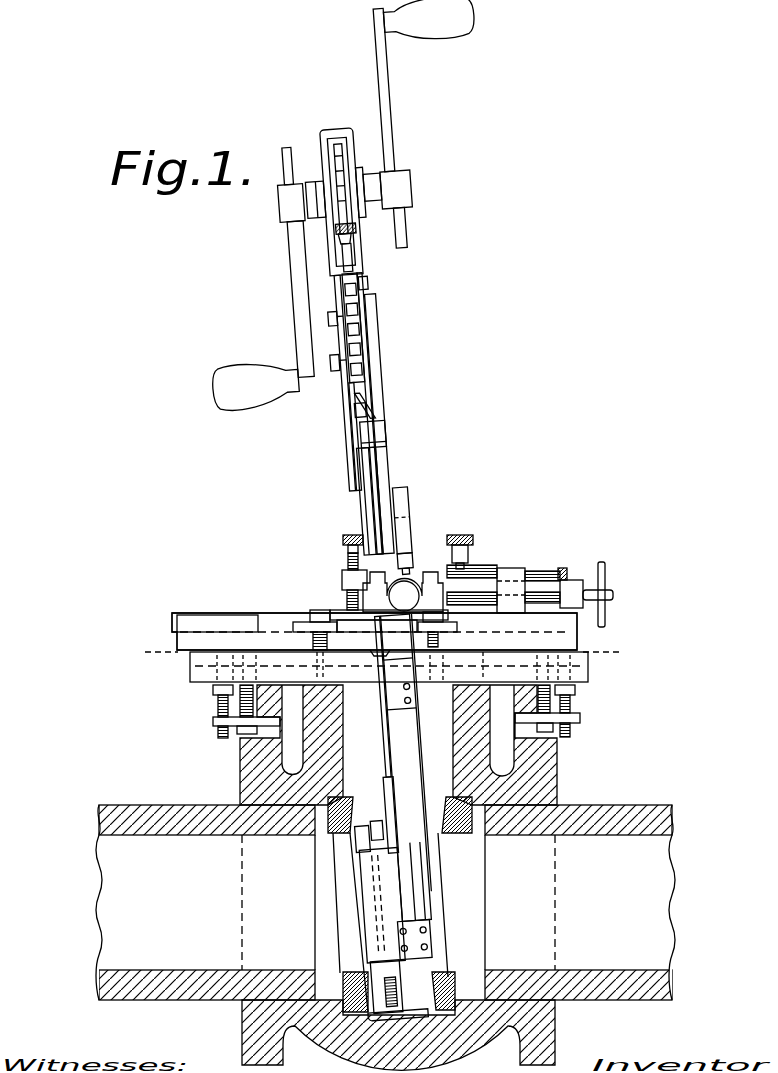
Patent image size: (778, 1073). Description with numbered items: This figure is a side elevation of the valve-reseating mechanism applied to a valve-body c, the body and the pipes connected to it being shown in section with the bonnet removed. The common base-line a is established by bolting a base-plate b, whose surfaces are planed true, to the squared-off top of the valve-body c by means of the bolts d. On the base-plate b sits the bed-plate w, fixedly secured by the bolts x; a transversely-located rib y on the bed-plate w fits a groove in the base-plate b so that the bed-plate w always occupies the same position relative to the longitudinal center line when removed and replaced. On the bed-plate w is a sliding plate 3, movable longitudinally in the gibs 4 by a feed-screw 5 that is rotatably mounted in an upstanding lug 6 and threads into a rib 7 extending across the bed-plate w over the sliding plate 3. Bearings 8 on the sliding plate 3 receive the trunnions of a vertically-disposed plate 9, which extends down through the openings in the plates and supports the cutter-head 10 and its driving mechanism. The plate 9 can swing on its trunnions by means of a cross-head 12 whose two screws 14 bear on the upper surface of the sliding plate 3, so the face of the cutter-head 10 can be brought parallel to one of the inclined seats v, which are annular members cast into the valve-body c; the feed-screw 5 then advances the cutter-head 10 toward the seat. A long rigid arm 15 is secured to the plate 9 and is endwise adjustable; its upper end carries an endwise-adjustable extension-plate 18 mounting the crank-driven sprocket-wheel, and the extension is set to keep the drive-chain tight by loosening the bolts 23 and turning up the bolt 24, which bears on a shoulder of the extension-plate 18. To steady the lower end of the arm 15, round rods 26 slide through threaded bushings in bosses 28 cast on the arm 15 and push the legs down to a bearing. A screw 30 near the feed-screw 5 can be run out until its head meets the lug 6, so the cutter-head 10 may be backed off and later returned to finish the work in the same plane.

The sliding plate 3 is at (197, 610).
The gibs 4 is at (219, 622).
The feed-screw 5 is at (613, 597).
The upstanding lug 6 is at (573, 590).
The rib 7 is at (507, 568).
The bearings 8 is at (409, 582).
The vertically-disposed plate 9 is at (410, 497).
The cutter-head 10 is at (383, 893).
The cross-head 12 is at (345, 582).
The screws 14 is at (343, 533).
The arm 15 is at (380, 360).
The extension-plate 18 is at (365, 255).
The bolts 23 is at (333, 330).
The bolt 24 is at (368, 286).
The round rods 26 is at (362, 380).
The bosses 28 is at (382, 442).
The screw 30 is at (533, 576).
The base-line a is at (379, 650).
The base-plate b is at (188, 676).
The valve-body c is at (241, 780).
The bolts d is at (238, 705).
The seats v is at (356, 806).
The bed-plate w is at (172, 638).
The bolts x is at (316, 610).
The rib y is at (382, 657).